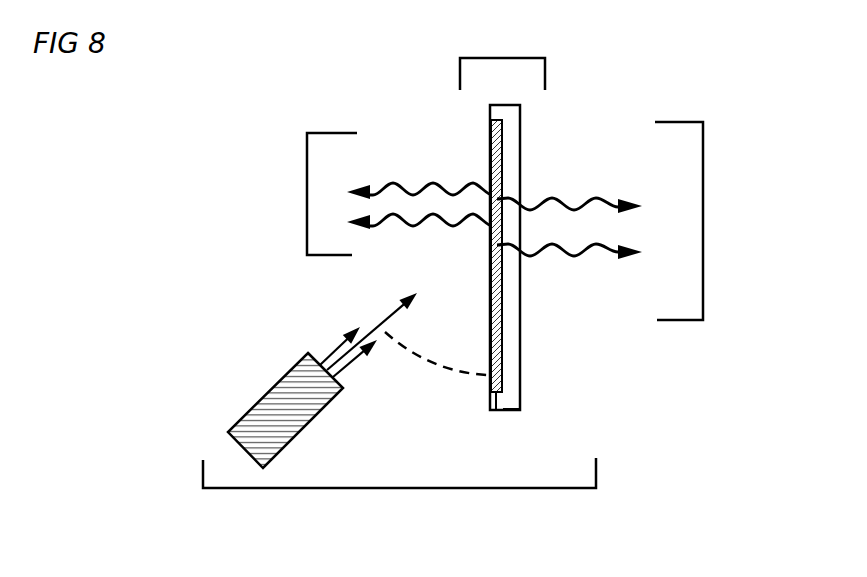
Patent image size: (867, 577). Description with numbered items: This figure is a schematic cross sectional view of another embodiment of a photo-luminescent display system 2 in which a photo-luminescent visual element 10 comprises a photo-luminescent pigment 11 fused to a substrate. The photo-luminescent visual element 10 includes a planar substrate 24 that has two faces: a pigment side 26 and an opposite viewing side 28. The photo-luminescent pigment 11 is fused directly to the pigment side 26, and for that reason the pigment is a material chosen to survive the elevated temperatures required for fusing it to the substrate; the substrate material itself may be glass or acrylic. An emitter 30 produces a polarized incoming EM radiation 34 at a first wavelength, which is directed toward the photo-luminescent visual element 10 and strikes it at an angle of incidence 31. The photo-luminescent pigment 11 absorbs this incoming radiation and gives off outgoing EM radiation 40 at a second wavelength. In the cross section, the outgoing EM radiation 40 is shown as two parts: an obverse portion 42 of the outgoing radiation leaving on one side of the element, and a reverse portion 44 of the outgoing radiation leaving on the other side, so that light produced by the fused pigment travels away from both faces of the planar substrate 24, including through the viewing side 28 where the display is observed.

The photo-luminescent display system 2 is at (400, 488).
The photo-luminescent visual element 10 is at (458, 73).
The photo-luminescent pigment 11 is at (497, 411).
The planar substrate 24 is at (503, 410).
The pigment side 26 is at (490, 145).
The viewing side 28 is at (522, 133).
The emitter 30 is at (228, 425).
The angle of incidence 31 is at (420, 384).
The polarized incoming EM radiation at a first wavelength 34 is at (387, 317).
The outgoing EM radiation at a second wavelength 40 is at (440, 187).
The obverse portion of outgoing radiation 42 is at (703, 182).
The reverse portion of outgoing radiation 44 is at (305, 172).